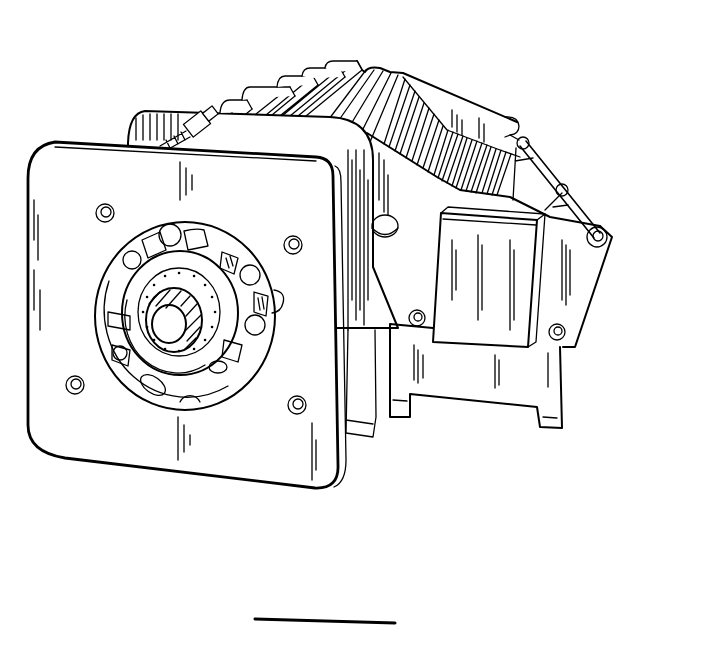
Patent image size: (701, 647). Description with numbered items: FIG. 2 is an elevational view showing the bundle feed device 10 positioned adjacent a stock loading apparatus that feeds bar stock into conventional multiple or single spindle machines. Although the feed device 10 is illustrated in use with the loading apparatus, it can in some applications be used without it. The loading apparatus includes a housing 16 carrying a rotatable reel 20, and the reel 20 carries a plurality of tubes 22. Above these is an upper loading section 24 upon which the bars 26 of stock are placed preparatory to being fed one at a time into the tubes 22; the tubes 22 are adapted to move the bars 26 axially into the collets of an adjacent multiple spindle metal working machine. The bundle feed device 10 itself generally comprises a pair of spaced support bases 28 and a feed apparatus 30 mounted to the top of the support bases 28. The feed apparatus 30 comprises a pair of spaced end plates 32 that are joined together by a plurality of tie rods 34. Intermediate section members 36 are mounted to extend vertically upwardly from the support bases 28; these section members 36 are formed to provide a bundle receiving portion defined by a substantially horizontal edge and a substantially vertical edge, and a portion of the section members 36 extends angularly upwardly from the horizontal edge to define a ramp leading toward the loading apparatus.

The bundle feed device 10 is at (613, 177).
The housing 16 is at (340, 277).
The rotatable reel 20 is at (205, 270).
The tubes 22 is at (167, 227).
The upper loading section 24 is at (340, 58).
The bars 26 is at (400, 85).
The support bases 28 is at (553, 379).
The feed apparatus 30 is at (495, 100).
The end plates 32 is at (443, 110).
The tie rods 34 is at (552, 168).
The intermediate section members 36 is at (530, 158).